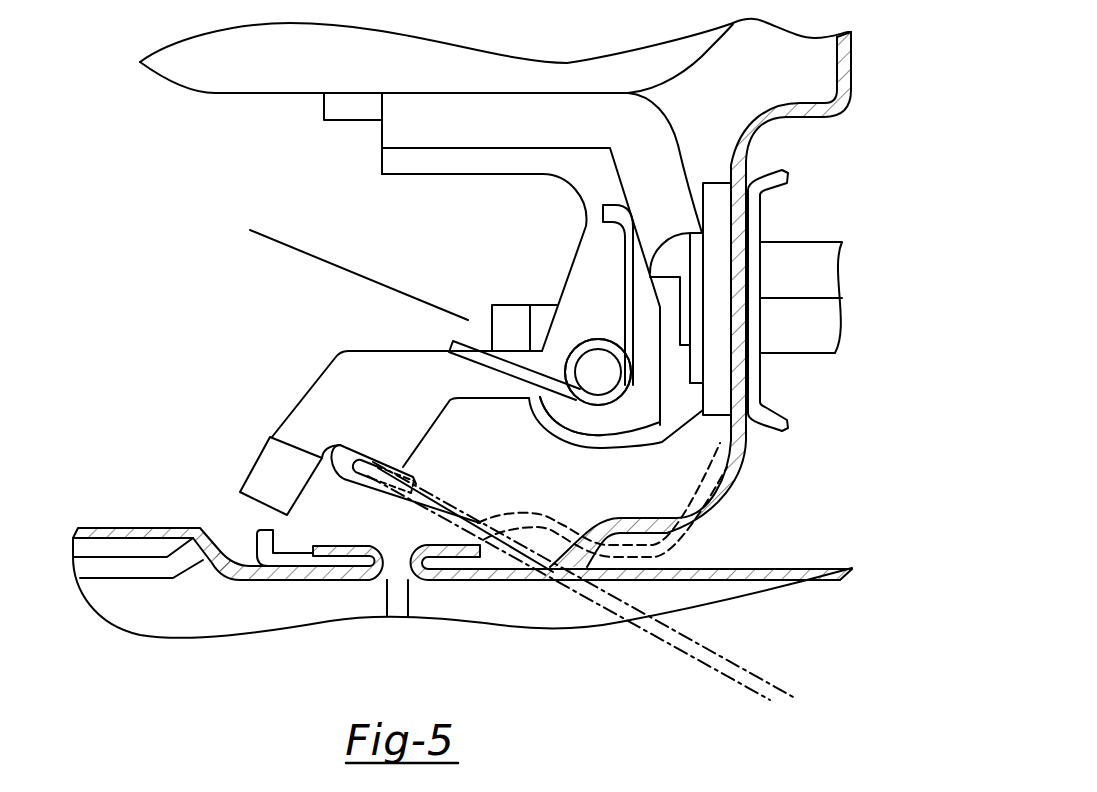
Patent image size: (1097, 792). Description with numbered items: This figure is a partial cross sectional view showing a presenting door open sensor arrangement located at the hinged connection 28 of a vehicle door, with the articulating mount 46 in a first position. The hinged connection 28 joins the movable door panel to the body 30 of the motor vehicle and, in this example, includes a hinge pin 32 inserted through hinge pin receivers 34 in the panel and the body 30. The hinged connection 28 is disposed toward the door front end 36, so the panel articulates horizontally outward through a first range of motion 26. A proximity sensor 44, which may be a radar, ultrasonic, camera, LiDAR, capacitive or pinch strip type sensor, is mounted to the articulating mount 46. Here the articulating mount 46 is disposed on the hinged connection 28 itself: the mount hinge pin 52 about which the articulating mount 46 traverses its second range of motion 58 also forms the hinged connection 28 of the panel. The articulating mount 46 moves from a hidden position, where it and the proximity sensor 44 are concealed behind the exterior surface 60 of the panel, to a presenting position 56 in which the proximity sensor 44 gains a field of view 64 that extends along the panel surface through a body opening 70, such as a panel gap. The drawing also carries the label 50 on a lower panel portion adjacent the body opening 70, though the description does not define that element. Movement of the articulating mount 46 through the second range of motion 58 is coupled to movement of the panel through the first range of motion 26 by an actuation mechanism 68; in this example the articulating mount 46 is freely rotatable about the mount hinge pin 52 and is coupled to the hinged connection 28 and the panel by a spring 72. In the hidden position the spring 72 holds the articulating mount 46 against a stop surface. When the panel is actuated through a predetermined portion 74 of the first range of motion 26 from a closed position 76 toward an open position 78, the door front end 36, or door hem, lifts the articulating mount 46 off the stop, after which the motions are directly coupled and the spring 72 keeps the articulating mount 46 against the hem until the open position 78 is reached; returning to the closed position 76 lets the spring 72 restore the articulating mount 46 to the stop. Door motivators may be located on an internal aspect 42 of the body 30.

The first range of motion 26 is at (264, 238).
The hinged connection 28 is at (601, 384).
The body 30 is at (132, 568).
The hinge pin 32 is at (583, 384).
The hinge pin receivers 34 is at (582, 240).
The door front end 36 is at (507, 581).
The internal aspect 42 is at (556, 279).
The proximity sensor 44 is at (252, 465).
The articulating mount 46 is at (323, 357).
The floor panel 50 is at (800, 568).
The mount hinge pin 52 is at (622, 386).
The presenting position 56 is at (260, 439).
The second range of motion 58 is at (264, 238).
The exterior surface 60 is at (322, 588).
The field of view 64 is at (376, 526).
The actuation mechanism 68 is at (545, 436).
The body opening 70 is at (398, 584).
The spring 72 is at (451, 342).
The predetermined portion 74 is at (234, 500).
The closed position 76 is at (768, 584).
The open position 78 is at (682, 662).